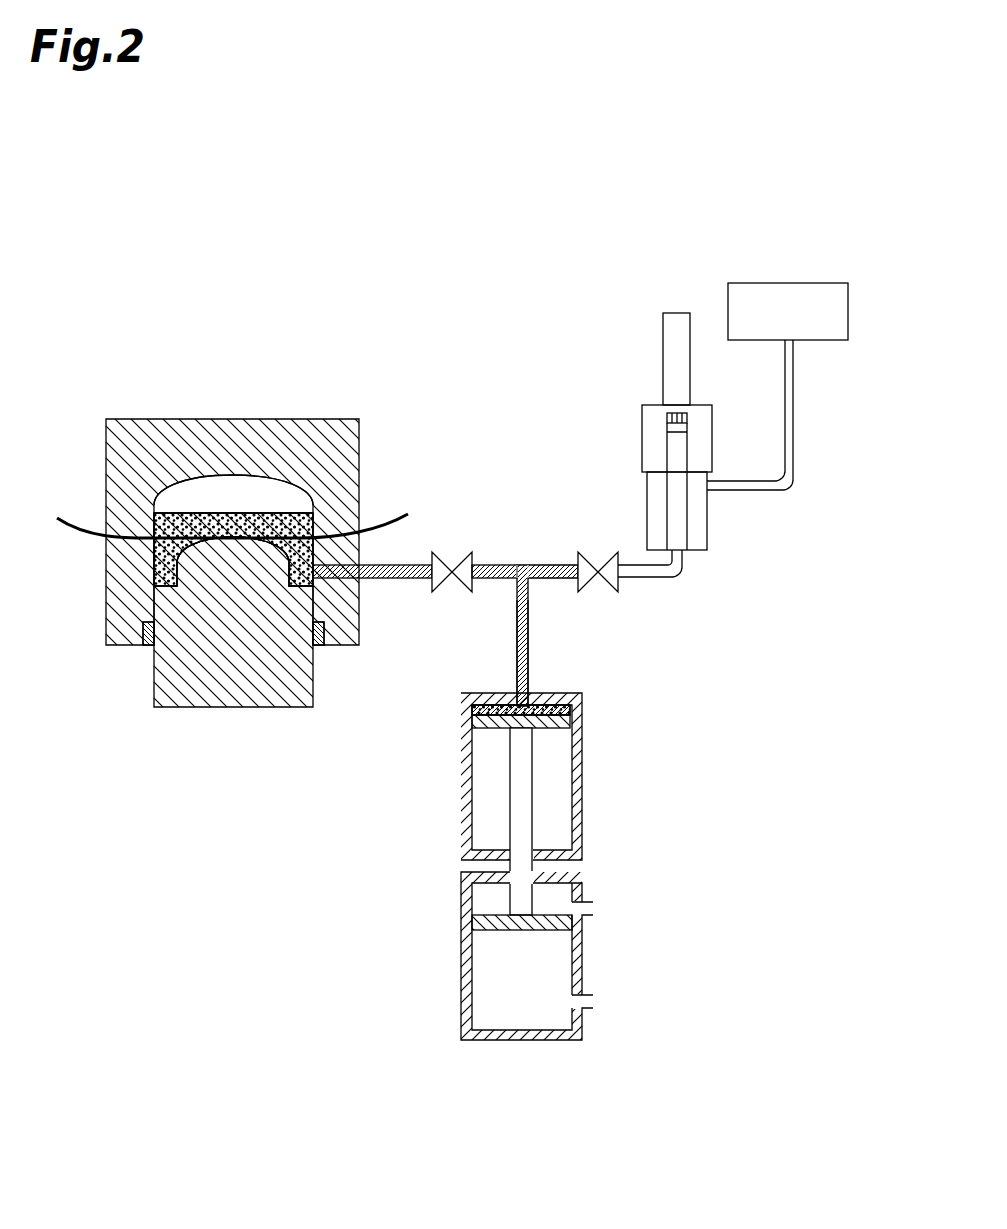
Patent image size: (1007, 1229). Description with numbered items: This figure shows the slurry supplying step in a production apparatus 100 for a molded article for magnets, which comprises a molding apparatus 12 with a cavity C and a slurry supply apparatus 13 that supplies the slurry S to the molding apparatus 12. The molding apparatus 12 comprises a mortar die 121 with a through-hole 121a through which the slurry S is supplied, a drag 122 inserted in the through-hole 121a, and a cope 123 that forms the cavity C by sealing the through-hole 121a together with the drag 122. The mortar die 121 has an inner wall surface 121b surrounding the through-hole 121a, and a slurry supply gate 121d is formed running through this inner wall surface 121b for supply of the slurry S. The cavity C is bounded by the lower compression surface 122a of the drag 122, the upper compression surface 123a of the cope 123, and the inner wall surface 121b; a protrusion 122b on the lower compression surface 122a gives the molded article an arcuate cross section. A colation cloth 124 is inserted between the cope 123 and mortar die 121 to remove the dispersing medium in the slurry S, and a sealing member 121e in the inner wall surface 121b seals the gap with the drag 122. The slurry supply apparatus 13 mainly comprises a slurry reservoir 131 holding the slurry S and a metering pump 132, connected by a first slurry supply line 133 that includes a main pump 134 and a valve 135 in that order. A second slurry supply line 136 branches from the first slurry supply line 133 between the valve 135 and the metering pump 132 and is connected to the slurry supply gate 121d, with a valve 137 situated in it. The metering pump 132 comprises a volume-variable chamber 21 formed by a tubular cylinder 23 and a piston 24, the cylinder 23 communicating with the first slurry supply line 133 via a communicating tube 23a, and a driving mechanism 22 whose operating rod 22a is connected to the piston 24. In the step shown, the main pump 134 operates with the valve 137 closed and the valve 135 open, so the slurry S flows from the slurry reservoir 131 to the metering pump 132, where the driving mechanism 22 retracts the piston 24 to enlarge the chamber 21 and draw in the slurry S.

The production apparatus 100 is at (410, 258).
The molding apparatus 12 is at (220, 378).
The slurry supply apparatus 13 is at (458, 371).
The cope 123 is at (147, 419).
The upper compression surface 123a is at (176, 497).
The cavity C is at (245, 500).
The slurry S is at (265, 515).
The mortar die 121 is at (101, 635).
The through-hole 121a is at (312, 530).
The inner wall surface 121b is at (165, 533).
The slurry supply gate 121d is at (363, 582).
The sealing member 121e is at (147, 647).
The drag 122 is at (173, 709).
The lower compression surface 122a is at (177, 566).
The protrusion 122b is at (218, 540).
The colation cloth 124 is at (65, 528).
The slurry reservoir 131 is at (807, 283).
The metering pump 132 is at (630, 736).
The first slurry supply line 133 is at (562, 565).
The main pump 134 is at (661, 345).
The valve 135 is at (607, 555).
The second slurry supply line 136 is at (497, 565).
The valve 137 is at (458, 552).
The chamber 21 is at (567, 703).
The driving mechanism 22 is at (578, 937).
The operating rod 22a is at (510, 863).
The cylinder 23 is at (576, 770).
The communicating tube 23a is at (528, 688).
The piston 24 is at (478, 720).